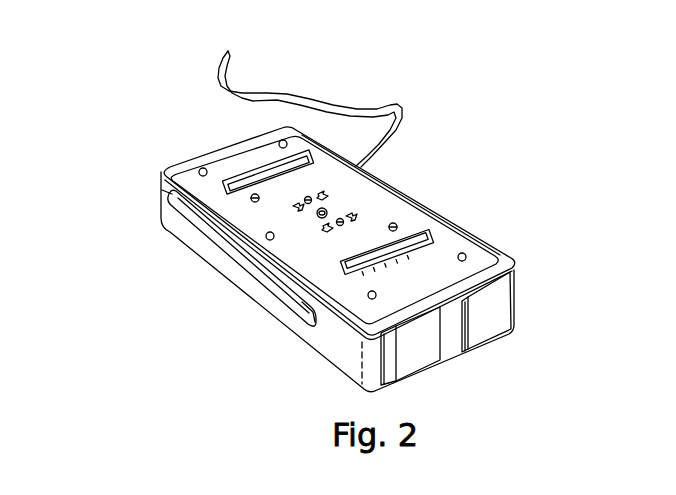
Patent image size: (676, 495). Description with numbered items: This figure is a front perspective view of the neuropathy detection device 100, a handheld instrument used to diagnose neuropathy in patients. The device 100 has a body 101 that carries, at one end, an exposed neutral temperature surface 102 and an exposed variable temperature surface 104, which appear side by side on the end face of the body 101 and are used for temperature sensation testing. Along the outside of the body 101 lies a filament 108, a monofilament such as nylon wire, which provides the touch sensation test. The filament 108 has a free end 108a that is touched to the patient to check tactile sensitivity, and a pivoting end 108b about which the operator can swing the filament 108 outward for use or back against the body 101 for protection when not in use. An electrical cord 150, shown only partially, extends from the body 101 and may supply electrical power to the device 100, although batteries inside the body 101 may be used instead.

The neuropathy detection device 100 is at (434, 131).
The body 101 is at (403, 194).
The neutral temperature surface 102 is at (495, 333).
The variable temperature surface 104 is at (411, 373).
The filament 108 is at (232, 246).
The free end 108a is at (160, 190).
The pivoting end 108b is at (314, 313).
The electrical cord 150 is at (333, 98).